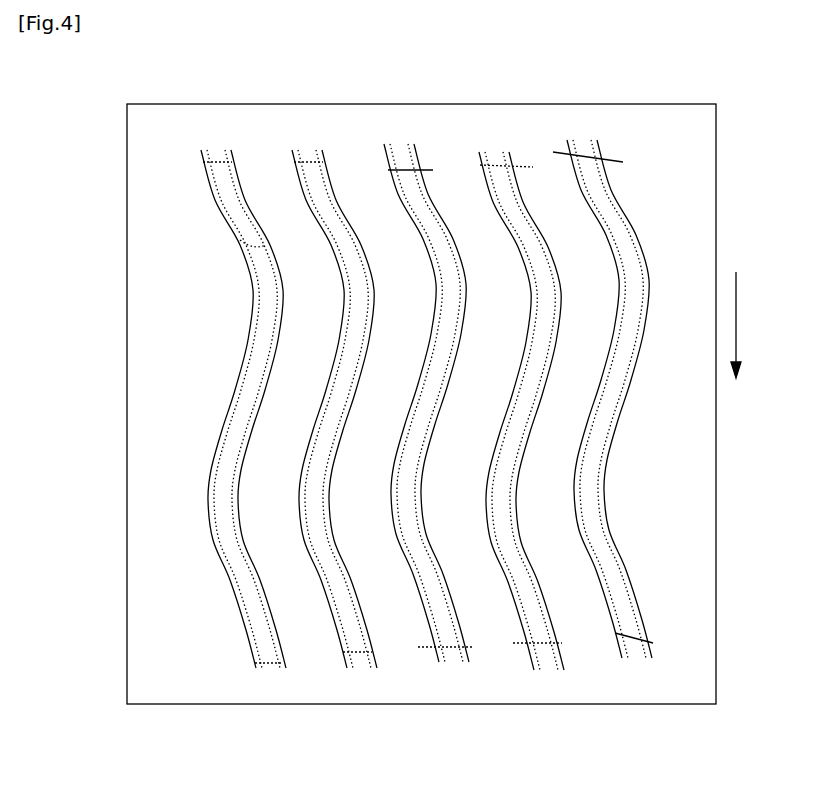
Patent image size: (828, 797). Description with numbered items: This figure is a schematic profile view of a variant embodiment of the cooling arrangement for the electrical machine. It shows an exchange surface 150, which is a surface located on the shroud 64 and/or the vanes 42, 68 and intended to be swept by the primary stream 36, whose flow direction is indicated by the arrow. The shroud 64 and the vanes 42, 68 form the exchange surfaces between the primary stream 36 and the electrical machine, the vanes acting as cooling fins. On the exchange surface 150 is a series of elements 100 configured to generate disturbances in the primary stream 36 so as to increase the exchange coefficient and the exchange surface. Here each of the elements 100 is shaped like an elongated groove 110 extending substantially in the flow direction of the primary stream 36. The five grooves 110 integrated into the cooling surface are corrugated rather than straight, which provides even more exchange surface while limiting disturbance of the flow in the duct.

The elongated groove 110 is at (240, 240).
The elements 100 is at (424, 394).
The primary stream 36 is at (736, 318).
The exchange surface 150 is at (437, 435).
The shroud 64 is at (407, 435).
The vane 42 is at (421, 404).
The vane 68 is at (178, 665).